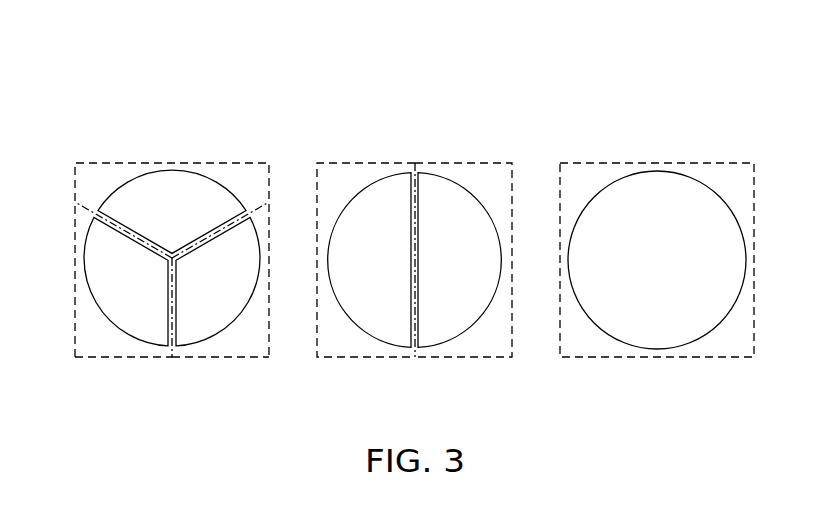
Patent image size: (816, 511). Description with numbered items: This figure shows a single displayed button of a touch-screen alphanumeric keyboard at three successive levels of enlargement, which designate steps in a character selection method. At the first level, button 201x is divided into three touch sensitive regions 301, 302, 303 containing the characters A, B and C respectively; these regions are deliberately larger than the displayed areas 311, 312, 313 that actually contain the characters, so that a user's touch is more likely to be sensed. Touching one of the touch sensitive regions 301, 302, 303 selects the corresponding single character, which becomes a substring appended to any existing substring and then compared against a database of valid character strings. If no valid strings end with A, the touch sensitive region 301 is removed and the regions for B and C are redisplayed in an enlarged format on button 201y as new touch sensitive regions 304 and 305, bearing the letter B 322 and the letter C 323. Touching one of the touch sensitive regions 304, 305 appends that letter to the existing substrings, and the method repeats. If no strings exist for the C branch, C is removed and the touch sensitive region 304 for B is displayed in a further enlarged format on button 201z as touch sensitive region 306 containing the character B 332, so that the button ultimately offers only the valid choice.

The button 201x is at (146, 114).
The button 201y is at (411, 114).
The button 201z is at (641, 114).
The touch sensitive region 301 is at (100, 161).
The touch sensitive region 302 is at (100, 352).
The touch sensitive region 303 is at (258, 352).
The touch sensitive region 304 is at (340, 161).
The touch sensitive region 305 is at (485, 161).
The touch sensitive region 306 is at (727, 161).
The displayed area 311 is at (183, 183).
The displayed area 312 is at (92, 247).
The displayed area 313 is at (198, 332).
The letter B 322 is at (377, 332).
The letter C 323 is at (455, 332).
The character B 332 is at (667, 332).